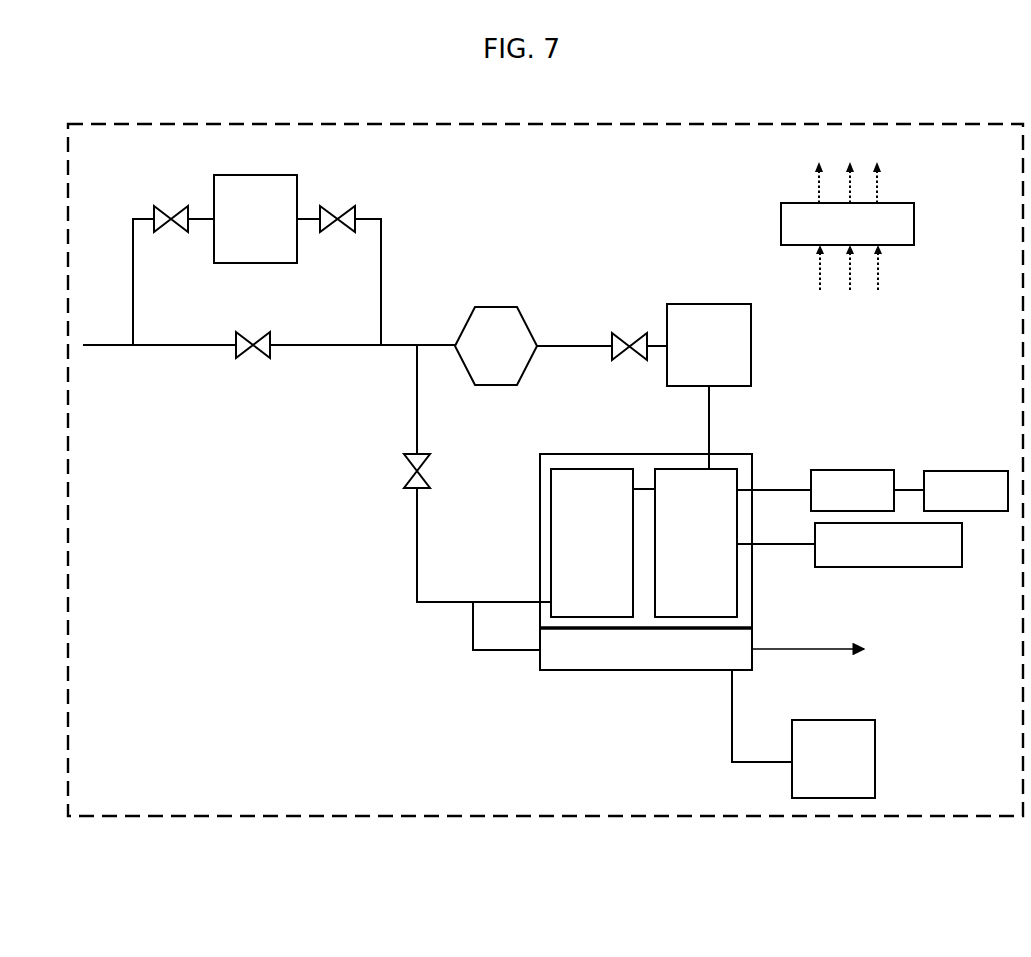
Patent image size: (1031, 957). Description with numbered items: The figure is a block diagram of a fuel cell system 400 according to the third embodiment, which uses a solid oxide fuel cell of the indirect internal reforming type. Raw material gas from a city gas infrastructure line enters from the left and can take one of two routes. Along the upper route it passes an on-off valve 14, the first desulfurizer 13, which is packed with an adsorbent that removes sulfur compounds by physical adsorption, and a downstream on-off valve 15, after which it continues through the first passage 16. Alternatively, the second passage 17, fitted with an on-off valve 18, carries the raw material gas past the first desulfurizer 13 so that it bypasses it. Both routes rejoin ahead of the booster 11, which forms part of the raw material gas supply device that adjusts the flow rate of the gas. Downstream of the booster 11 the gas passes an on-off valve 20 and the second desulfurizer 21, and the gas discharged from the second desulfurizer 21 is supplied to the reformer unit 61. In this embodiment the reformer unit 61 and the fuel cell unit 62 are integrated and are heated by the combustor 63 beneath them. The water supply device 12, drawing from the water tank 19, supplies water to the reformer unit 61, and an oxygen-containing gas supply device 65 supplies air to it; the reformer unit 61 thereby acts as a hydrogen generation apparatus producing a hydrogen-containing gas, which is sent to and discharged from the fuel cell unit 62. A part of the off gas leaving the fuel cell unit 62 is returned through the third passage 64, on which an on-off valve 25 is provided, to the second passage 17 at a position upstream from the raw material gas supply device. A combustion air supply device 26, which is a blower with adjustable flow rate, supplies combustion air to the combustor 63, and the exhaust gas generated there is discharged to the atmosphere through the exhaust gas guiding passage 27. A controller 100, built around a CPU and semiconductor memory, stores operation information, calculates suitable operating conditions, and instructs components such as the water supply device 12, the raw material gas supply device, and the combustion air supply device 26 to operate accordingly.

The fuel cell system 400 is at (571, 116).
The booster 11 is at (496, 346).
The water supply device 12 is at (815, 491).
The first desulfurizer 13 is at (255, 219).
The on-off valve 14 is at (172, 213).
The on-off valve 15 is at (345, 210).
The first passage 16 is at (381, 293).
The second passage 17 is at (205, 348).
The on-off valve 18 is at (266, 360).
The water tank 19 is at (951, 491).
The on-off valve 20 is at (628, 360).
The second desulfurizer 21 is at (709, 345).
The on-off valve 25 is at (432, 454).
The combustion air supply device 26 is at (803, 734).
The exhaust gas guiding passage 27 is at (820, 655).
The reformer unit 61 is at (696, 543).
The fuel cell unit 62 is at (592, 543).
The combustor 63 is at (646, 648).
The third passage 64 is at (417, 567).
The oxygen-containing gas supply device 65 is at (849, 545).
The controller 100 is at (847, 226).